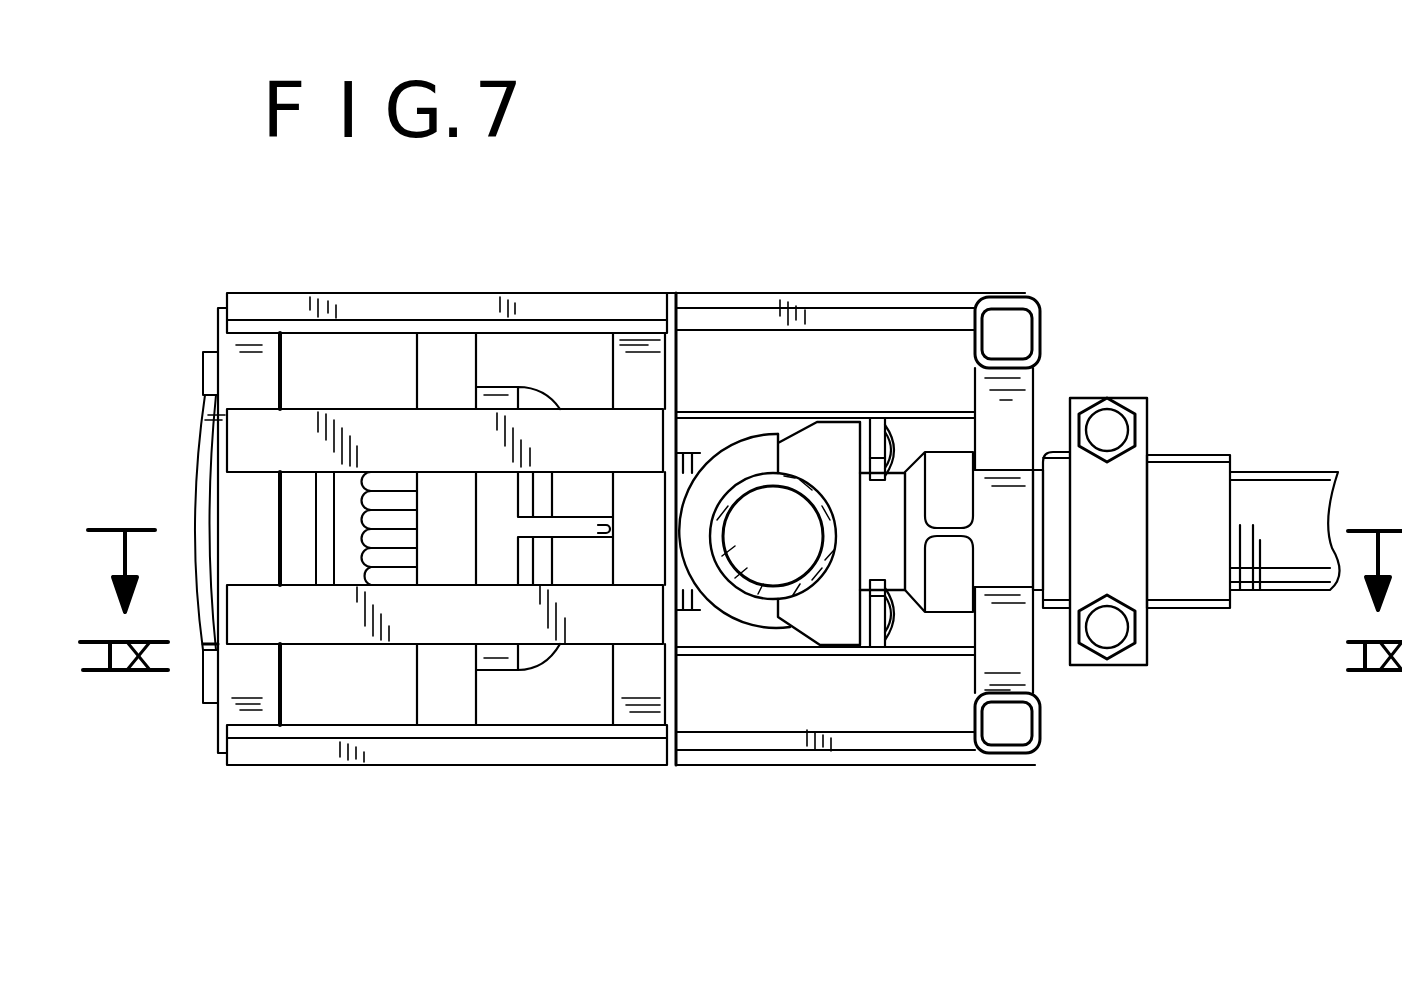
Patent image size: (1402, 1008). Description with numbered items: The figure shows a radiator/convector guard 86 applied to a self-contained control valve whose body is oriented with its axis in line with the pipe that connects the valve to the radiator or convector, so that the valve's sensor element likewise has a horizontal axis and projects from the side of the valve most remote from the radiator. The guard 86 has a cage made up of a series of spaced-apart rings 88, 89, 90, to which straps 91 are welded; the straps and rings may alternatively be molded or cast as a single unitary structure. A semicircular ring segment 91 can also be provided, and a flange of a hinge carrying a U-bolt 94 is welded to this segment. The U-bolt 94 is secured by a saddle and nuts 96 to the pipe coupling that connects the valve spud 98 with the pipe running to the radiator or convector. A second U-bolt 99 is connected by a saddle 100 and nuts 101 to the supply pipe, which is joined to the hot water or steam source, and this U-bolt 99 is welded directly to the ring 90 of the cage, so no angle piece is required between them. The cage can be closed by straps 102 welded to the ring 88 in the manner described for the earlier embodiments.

The guard 86 is at (411, 778).
The ring 88 is at (266, 677).
The ring 89 is at (467, 688).
The ring 90 is at (620, 682).
The straps 91 is at (698, 295).
The U-bolt 94 is at (1193, 487).
The nuts 96 is at (1107, 430).
The valve spud 98 is at (1038, 750).
The U-bolt 99 is at (740, 458).
The saddle 100 is at (810, 617).
The nuts 101 is at (878, 443).
The straps 102 is at (202, 640).